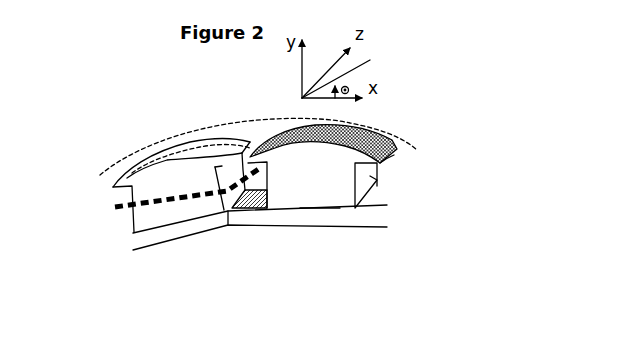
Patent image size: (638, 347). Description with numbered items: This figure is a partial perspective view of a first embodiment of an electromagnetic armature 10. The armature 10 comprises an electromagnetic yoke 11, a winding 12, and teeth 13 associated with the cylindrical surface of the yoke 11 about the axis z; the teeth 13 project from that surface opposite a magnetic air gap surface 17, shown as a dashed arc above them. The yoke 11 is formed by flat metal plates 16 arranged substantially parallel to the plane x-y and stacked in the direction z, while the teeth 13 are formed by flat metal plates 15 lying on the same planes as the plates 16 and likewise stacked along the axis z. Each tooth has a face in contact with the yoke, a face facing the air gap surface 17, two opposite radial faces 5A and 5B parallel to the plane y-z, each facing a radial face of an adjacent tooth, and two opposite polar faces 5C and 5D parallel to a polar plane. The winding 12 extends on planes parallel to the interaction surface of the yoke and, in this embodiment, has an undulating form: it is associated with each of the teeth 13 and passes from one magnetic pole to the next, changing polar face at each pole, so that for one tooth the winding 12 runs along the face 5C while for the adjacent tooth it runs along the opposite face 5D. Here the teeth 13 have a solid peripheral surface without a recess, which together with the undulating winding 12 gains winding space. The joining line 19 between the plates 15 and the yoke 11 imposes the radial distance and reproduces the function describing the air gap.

The electromagnetic armature 10 is at (101, 111).
The magnetic air gap surface 17 is at (159, 138).
The teeth 13 is at (220, 137).
The flat metal plates 15 is at (378, 167).
The radial face 5A is at (262, 187).
The radial face 5B is at (365, 187).
The polar face 5C is at (380, 179).
The polar face 5D is at (338, 195).
The winding 12 is at (190, 205).
The joining line 19 is at (208, 220).
The electromagnetic yoke 11 is at (248, 222).
The flat metal plates 16 is at (242, 209).